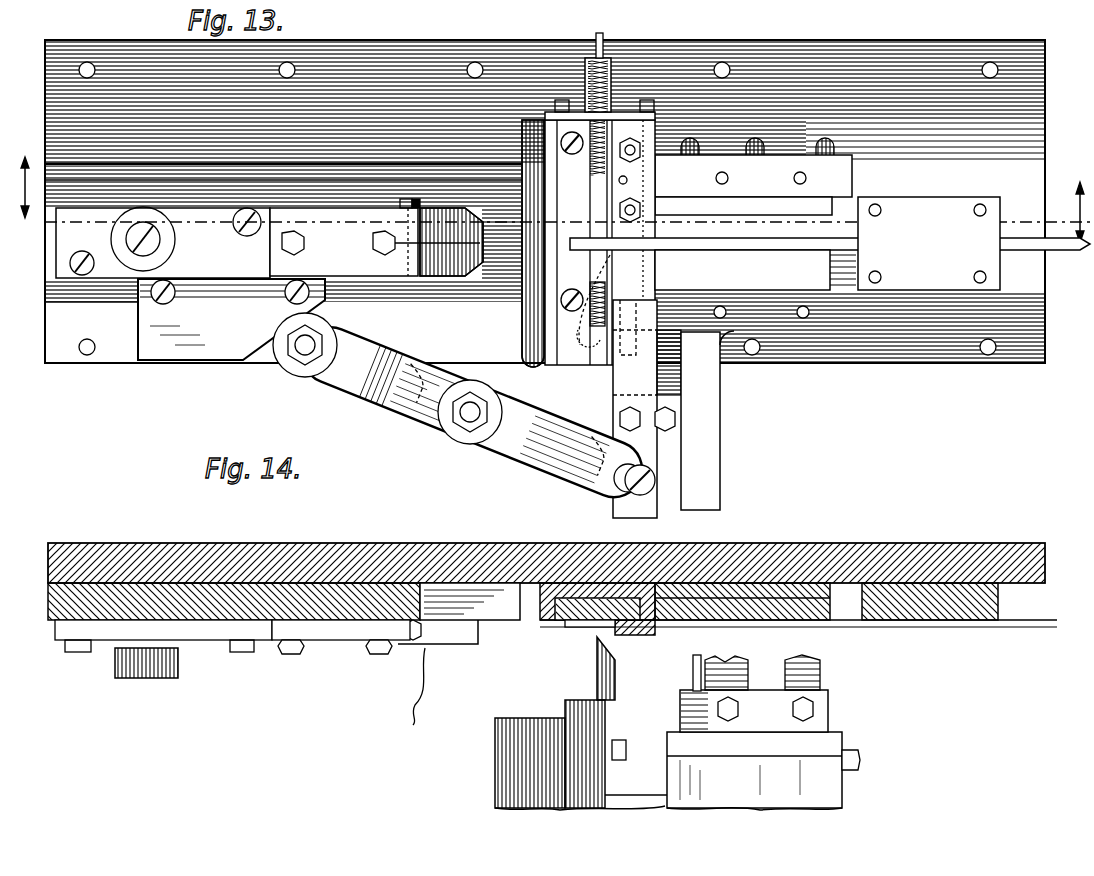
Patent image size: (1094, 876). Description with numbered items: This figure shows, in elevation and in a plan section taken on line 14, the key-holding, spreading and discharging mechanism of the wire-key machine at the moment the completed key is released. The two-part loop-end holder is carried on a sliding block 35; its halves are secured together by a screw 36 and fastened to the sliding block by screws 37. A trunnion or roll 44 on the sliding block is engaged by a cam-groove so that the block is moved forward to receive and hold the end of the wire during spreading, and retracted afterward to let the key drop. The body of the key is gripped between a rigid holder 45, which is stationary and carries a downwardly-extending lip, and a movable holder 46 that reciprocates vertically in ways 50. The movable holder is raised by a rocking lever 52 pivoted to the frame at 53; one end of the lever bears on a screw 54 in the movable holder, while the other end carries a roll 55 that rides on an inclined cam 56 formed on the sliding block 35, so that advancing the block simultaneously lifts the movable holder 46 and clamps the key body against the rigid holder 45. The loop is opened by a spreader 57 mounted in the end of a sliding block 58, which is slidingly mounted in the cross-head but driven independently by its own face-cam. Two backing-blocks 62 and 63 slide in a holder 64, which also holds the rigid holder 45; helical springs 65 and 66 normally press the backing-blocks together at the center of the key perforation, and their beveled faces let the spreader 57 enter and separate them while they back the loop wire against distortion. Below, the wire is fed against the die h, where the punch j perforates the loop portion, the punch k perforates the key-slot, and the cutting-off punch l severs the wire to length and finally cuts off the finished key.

In FIG. 13, the section line 14 is at (548, 200).
In FIG. 13, the sliding block 35 is at (270, 195).
In FIG. 14, the sliding block 35 is at (234, 601).
In FIG. 13, the screw 36 is at (376, 228).
In FIG. 14, the screw 36 is at (459, 654).
In FIG. 13, the screws 37 is at (380, 250).
In FIG. 14, the screws 37 is at (380, 655).
In FIG. 13, the trunnion or roll 44 is at (128, 228).
In FIG. 14, the trunnion or roll 44 is at (180, 672).
In FIG. 13, the rigid holder 45 is at (637, 184).
In FIG. 14, the rigid holder 45 is at (635, 636).
In FIG. 13, the movable holder 46 is at (647, 409).
In FIG. 13, the ways 50 is at (707, 420).
In FIG. 13, the rocking lever 52 is at (558, 468).
In FIG. 13, the pivot 53 is at (468, 418).
In FIG. 13, the screw 54 is at (660, 484).
In FIG. 13, the roll 55 is at (283, 362).
In FIG. 13, the inclined cam 56 is at (231, 319).
In FIG. 14, the spreader 57 is at (597, 676).
In FIG. 14, the sliding block 58 is at (581, 755).
In FIG. 13, the backing-block 62 is at (596, 200).
In FIG. 14, the backing-block 62 is at (598, 600).
In FIG. 13, the backing-block 63 is at (600, 268).
In FIG. 13, the holder 64 is at (507, 42).
In FIG. 14, the holder 64 is at (552, 571).
In FIG. 13, the helical spring 65 is at (603, 306).
In FIG. 13, the helical spring 66 is at (610, 75).
In FIG. 13, the pivot axis b is at (600, 296).
In FIG. 13, the die h is at (830, 243).
In FIG. 14, the die h is at (762, 605).
In FIG. 14, the punch j is at (740, 665).
In FIG. 14, the punch k is at (812, 665).
In FIG. 14, the cutting-off punch l is at (690, 668).